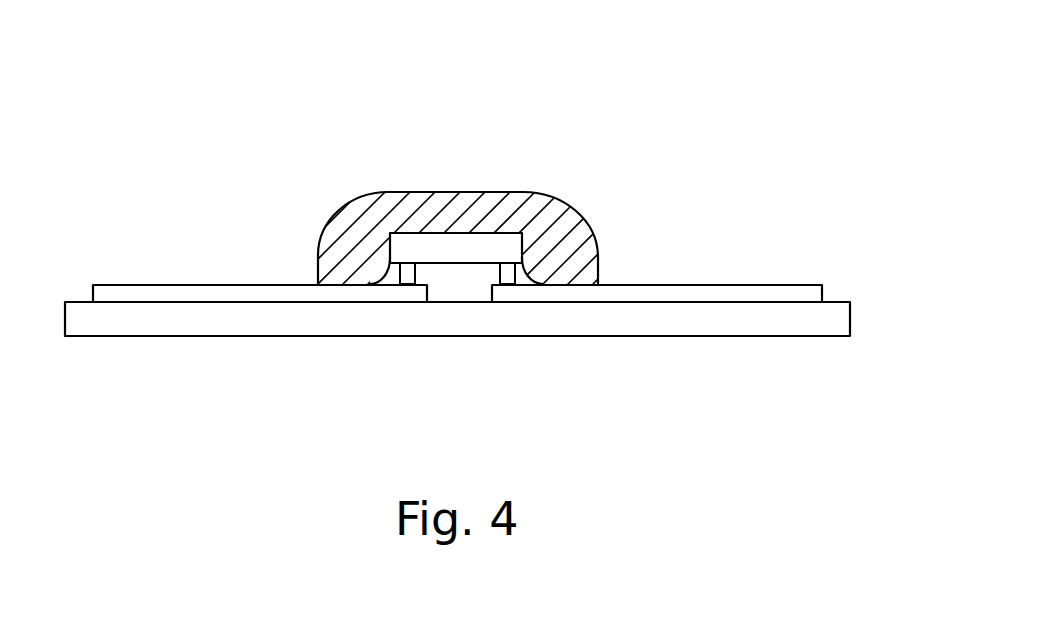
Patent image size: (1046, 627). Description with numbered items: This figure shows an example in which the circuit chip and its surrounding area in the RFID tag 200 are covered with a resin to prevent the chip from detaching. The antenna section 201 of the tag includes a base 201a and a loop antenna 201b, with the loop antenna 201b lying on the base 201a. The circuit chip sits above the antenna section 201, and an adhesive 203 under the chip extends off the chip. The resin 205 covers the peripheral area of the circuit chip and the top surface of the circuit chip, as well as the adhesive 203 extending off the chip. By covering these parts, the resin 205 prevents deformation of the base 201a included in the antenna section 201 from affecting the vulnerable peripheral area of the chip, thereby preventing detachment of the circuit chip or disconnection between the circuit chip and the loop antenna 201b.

The RFID tag 200 is at (655, 133).
The antenna section 201 is at (912, 203).
The base 201a is at (837, 302).
The loop antenna 201b is at (773, 285).
The adhesive 203 is at (457, 290).
The resin 205 is at (463, 191).